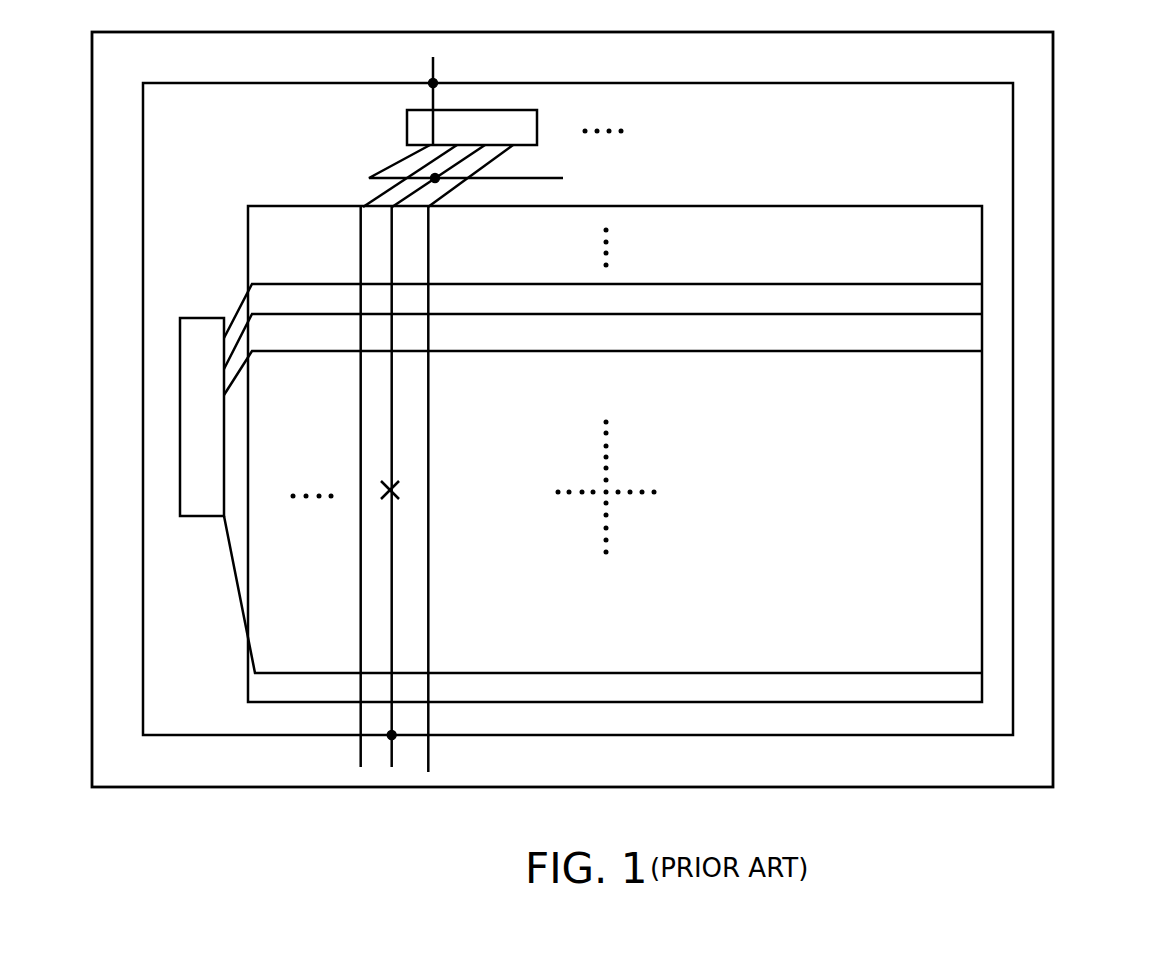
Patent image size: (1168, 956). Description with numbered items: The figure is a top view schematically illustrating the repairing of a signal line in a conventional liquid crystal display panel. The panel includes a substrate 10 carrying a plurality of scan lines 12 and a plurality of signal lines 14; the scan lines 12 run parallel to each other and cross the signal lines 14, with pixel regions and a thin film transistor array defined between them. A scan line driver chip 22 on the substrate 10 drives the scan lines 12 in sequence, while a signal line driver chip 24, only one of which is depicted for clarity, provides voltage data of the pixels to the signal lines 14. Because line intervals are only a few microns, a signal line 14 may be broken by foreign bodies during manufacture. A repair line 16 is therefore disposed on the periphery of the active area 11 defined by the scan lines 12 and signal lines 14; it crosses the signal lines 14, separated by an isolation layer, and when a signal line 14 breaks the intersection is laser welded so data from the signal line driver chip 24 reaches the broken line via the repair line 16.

The substrate 10 is at (1053, 110).
The active area 11 is at (839, 205).
The scan lines 12 is at (794, 360).
The signal lines 14 is at (438, 578).
The repair line 16 is at (150, 147).
The scan line driver chip 22 is at (195, 518).
The signal line driver chip 24 is at (505, 110).